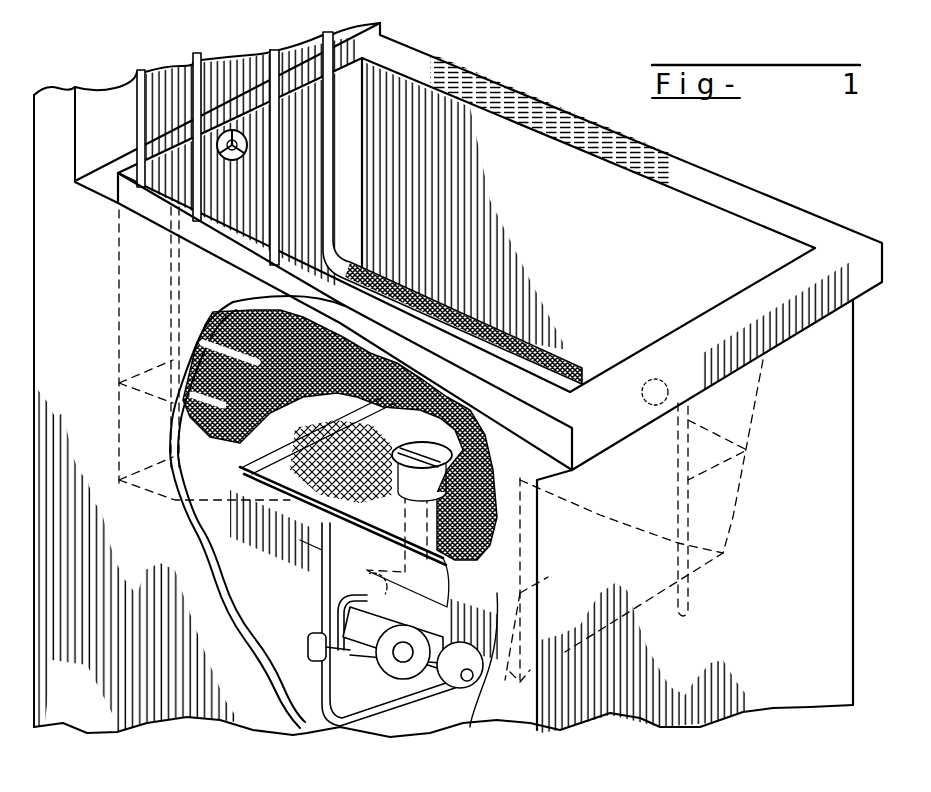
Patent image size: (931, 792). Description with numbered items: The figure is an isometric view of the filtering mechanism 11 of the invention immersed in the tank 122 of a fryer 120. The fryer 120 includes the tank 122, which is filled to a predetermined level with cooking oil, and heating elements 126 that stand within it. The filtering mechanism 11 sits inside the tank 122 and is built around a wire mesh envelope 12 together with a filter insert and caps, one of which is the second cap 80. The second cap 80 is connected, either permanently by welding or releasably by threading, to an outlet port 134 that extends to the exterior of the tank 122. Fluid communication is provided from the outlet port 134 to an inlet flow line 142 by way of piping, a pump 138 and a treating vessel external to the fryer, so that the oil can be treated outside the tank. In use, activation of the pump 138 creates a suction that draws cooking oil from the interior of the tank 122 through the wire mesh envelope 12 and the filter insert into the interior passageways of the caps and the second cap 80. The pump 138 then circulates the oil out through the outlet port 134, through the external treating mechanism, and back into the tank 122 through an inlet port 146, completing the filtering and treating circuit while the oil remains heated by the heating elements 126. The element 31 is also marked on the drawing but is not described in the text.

The filtering mechanism 11 is at (248, 464).
The wire mesh envelope 12 is at (487, 463).
The drain cap 31 is at (453, 437).
The second cap 80 is at (365, 477).
The fryer 120 is at (710, 170).
The tank 122 is at (533, 153).
The heating elements 126 is at (141, 70).
The outlet port 134 is at (318, 571).
The pump 138 is at (455, 688).
The inlet flow line 142 is at (172, 268).
The inlet port 146 is at (247, 139).